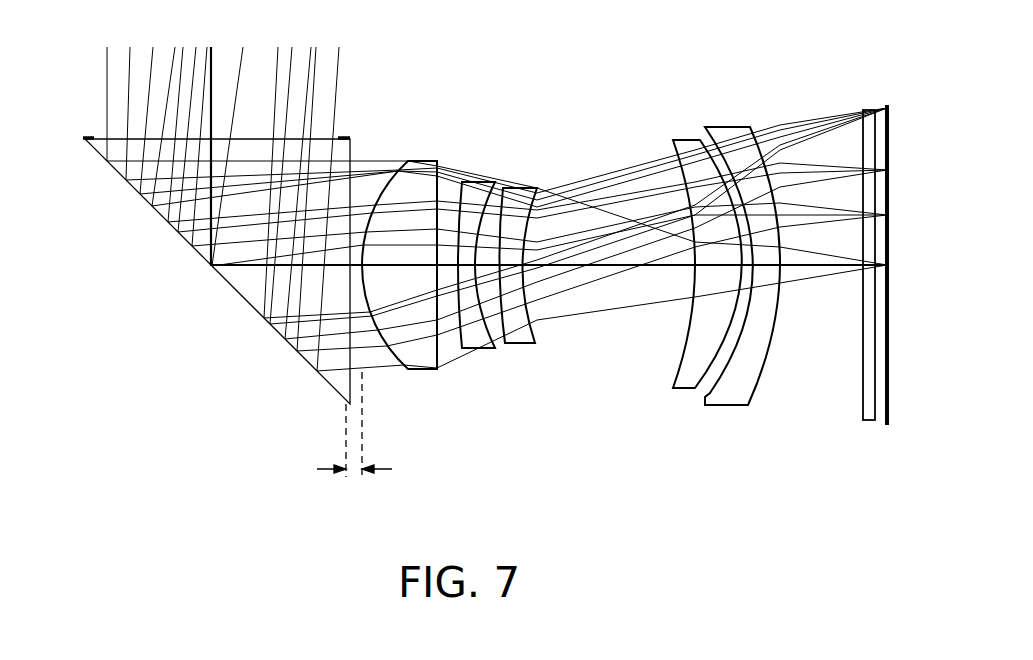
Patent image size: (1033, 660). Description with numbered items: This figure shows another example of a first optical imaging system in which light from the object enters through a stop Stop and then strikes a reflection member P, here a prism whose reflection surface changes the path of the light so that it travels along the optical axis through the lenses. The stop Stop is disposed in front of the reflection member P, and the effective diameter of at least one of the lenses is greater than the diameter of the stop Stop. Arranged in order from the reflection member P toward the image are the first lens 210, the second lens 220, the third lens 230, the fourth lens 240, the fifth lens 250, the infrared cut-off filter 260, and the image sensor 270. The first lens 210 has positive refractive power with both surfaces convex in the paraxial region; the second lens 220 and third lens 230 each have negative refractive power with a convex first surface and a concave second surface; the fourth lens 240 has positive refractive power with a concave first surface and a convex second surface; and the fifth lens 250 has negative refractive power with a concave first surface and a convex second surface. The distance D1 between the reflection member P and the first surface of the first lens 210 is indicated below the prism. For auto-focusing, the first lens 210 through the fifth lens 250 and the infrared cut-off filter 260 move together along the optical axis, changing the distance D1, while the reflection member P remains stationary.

The first lens 210 is at (420, 187).
The second lens 220 is at (475, 213).
The third lens 230 is at (518, 190).
The fourth lens 240 is at (685, 142).
The fifth lens 250 is at (722, 128).
The infrared cut-off filter 260 is at (862, 140).
The image sensor 270 is at (890, 133).
The reflection member P is at (178, 233).
The stop Stop is at (84, 138).
The distance between the reflection member and the first surface of the first lens D1 is at (354, 437).